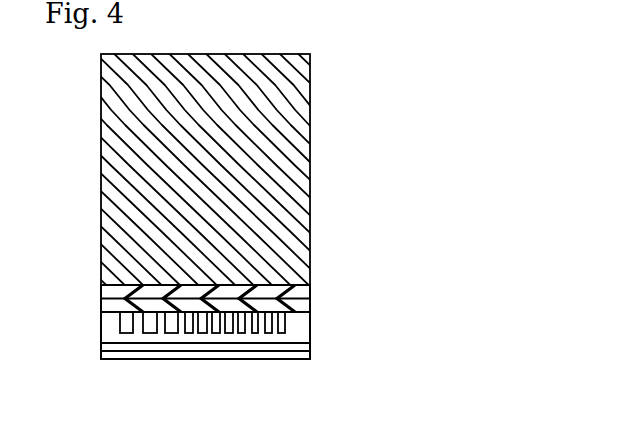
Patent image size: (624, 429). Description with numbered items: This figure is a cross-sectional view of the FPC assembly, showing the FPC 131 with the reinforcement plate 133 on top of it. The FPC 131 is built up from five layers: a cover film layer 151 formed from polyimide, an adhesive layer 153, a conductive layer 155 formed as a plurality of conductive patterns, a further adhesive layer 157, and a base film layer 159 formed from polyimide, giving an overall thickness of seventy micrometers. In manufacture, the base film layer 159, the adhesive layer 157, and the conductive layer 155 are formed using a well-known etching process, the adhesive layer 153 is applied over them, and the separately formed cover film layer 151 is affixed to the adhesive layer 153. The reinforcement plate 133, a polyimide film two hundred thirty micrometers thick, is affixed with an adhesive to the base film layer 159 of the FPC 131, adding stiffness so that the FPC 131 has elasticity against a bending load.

The reinforcement plate 133 is at (323, 60).
The FPC 131 is at (323, 288).
The base film layer 159 is at (101, 292).
The adhesive layer 157 is at (101, 311).
The conductive layer 155 is at (167, 333).
The adhesive layer 153 is at (101, 329).
The cover film layer 151 is at (101, 351).